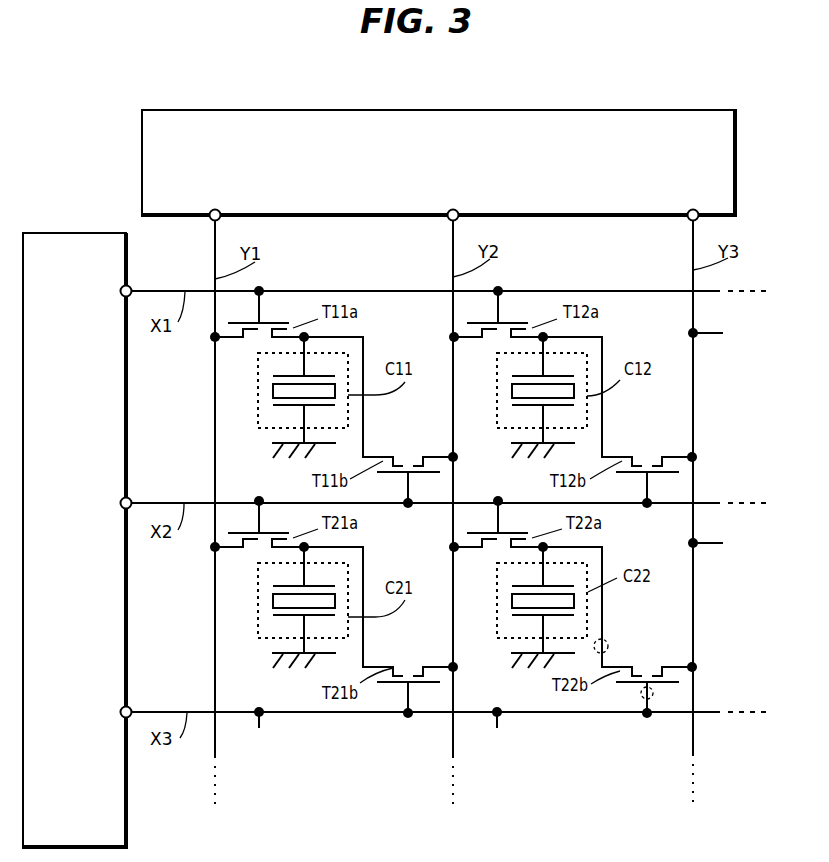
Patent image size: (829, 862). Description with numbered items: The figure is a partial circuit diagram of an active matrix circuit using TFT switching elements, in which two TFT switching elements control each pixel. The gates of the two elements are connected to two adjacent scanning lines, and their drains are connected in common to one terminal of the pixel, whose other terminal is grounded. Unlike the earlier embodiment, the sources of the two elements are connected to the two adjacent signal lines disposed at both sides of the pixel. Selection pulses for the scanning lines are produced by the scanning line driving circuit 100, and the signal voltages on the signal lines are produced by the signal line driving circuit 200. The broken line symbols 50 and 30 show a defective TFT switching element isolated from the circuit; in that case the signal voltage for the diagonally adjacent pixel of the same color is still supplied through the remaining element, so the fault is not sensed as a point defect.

The scanning line driving circuit 100 is at (77, 233).
The signal line driving circuit 200 is at (142, 189).
The broken line symbol 30 is at (603, 645).
The broken line symbol X 50 is at (643, 696).